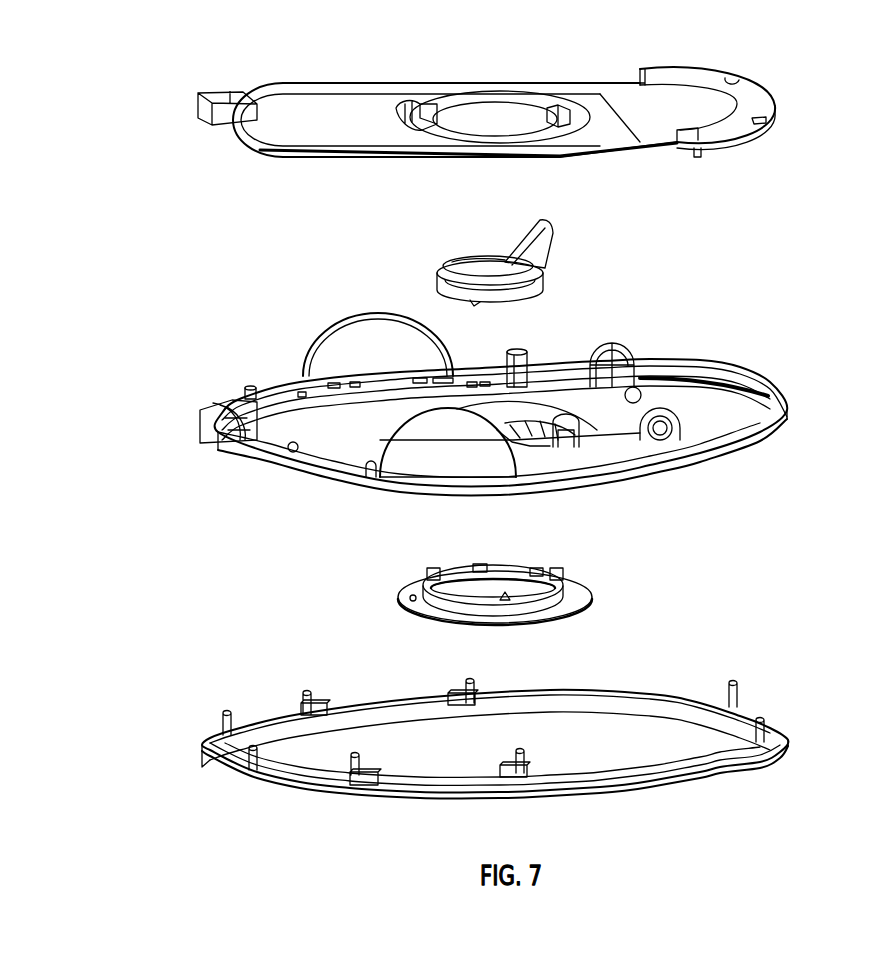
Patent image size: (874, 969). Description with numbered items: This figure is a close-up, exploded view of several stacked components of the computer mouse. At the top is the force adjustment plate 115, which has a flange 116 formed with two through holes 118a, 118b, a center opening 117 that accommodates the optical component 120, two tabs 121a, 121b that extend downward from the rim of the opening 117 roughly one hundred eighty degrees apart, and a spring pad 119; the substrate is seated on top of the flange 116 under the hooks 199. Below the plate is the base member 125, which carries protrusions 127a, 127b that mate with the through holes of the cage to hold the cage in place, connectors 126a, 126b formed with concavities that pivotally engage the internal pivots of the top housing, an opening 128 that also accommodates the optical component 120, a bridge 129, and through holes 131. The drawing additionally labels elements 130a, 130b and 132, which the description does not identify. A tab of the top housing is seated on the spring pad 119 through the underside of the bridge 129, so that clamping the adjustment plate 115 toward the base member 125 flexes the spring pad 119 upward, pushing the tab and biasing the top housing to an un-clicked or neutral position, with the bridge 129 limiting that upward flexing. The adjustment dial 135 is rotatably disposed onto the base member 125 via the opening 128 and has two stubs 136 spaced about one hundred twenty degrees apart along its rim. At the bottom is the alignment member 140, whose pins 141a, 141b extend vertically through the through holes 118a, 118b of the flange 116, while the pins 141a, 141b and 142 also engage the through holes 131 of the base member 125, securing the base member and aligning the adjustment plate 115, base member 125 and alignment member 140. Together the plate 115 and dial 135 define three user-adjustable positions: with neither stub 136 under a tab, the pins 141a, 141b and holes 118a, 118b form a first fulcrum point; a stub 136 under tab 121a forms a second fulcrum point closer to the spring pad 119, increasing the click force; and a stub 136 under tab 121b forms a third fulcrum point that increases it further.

The force adjustment plate 115 is at (785, 79).
The flange 116 is at (729, 142).
The center opening 117 is at (512, 112).
The through hole 118a is at (763, 121).
The through hole 118b is at (735, 79).
The spring pad 119 is at (200, 113).
The optical component 120 is at (558, 272).
The tab 121a is at (560, 104).
The tab 121b is at (432, 118).
The base member 125 is at (793, 384).
The connector 126a is at (670, 438).
The connector 126b is at (626, 357).
The protrusion 127a is at (568, 430).
The protrusion 127b is at (530, 352).
The opening 128 is at (505, 420).
The bridge 129 is at (212, 425).
The dome 130a is at (418, 484).
The dome 130b is at (342, 358).
The through holes 131 is at (302, 392).
The bump 132 is at (366, 474).
The adjustment dial 135 is at (597, 590).
The stubs 136 is at (425, 572).
The alignment member 140 is at (795, 716).
The pin 141a is at (767, 740).
The pin 141b is at (740, 686).
The pins 142 is at (222, 714).
The hooks 199 is at (244, 390).